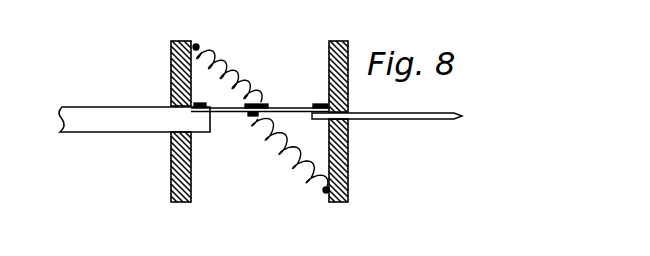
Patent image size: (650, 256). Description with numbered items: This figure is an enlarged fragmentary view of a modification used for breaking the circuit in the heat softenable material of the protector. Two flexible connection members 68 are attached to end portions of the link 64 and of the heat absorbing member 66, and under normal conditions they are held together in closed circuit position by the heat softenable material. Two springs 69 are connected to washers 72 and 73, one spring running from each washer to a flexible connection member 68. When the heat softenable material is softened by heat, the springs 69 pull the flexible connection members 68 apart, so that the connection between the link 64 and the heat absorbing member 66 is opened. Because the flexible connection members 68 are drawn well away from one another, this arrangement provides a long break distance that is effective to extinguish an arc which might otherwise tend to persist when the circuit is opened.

The link 64 is at (420, 119).
The heat absorbing member 66 is at (118, 122).
The flexible connection members 68 is at (210, 111).
The springs 69 is at (228, 66).
The washer 72 is at (171, 82).
The washer 73 is at (348, 99).